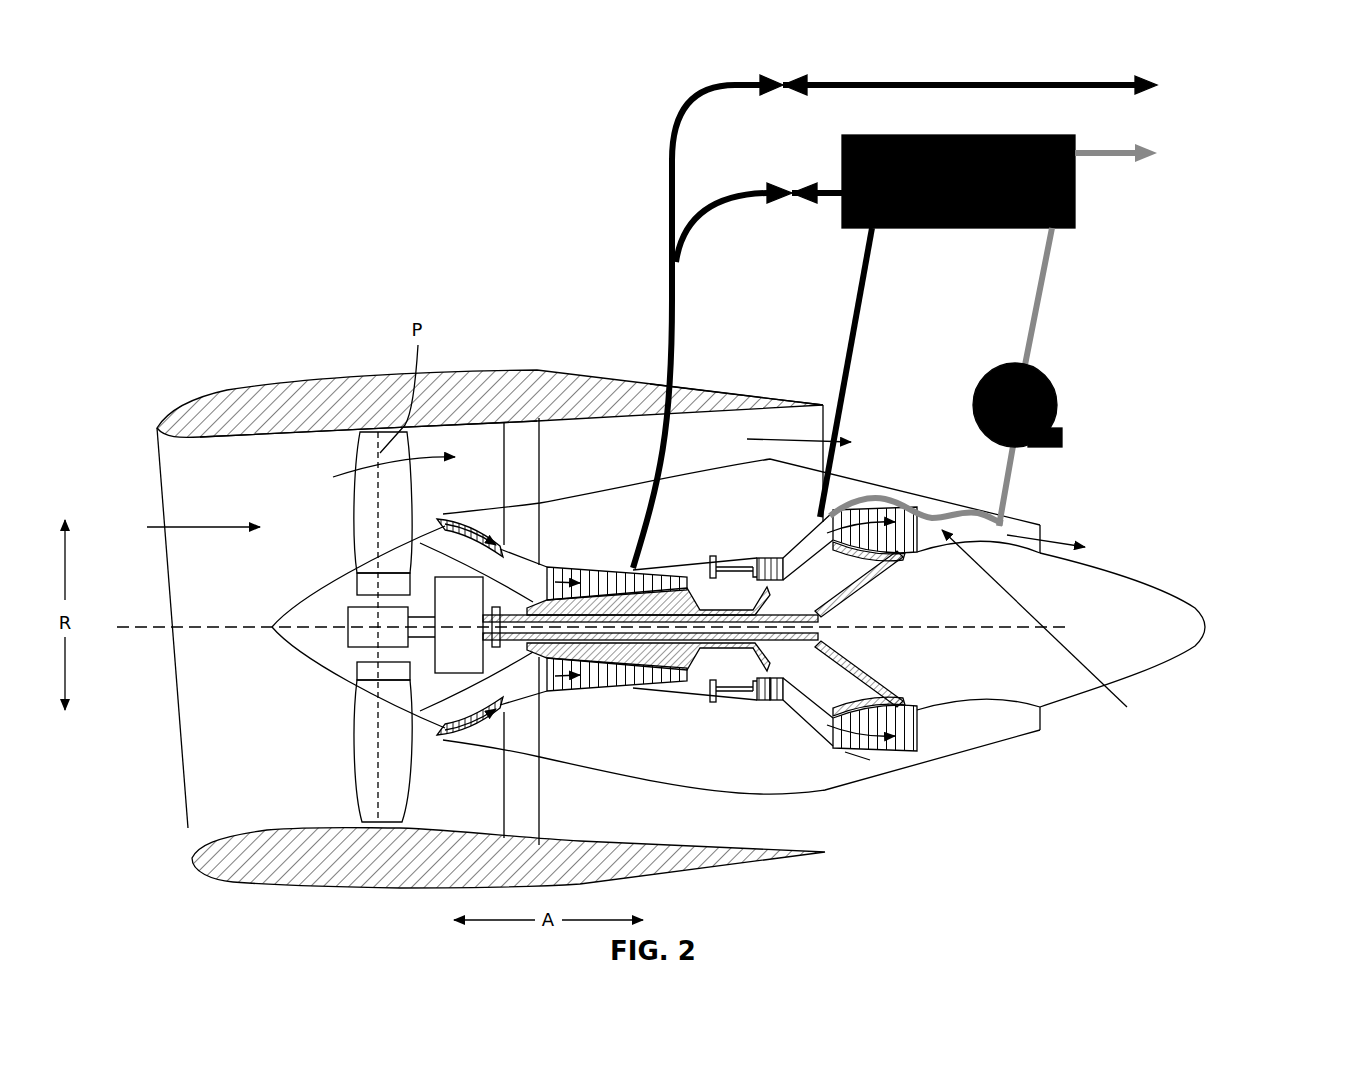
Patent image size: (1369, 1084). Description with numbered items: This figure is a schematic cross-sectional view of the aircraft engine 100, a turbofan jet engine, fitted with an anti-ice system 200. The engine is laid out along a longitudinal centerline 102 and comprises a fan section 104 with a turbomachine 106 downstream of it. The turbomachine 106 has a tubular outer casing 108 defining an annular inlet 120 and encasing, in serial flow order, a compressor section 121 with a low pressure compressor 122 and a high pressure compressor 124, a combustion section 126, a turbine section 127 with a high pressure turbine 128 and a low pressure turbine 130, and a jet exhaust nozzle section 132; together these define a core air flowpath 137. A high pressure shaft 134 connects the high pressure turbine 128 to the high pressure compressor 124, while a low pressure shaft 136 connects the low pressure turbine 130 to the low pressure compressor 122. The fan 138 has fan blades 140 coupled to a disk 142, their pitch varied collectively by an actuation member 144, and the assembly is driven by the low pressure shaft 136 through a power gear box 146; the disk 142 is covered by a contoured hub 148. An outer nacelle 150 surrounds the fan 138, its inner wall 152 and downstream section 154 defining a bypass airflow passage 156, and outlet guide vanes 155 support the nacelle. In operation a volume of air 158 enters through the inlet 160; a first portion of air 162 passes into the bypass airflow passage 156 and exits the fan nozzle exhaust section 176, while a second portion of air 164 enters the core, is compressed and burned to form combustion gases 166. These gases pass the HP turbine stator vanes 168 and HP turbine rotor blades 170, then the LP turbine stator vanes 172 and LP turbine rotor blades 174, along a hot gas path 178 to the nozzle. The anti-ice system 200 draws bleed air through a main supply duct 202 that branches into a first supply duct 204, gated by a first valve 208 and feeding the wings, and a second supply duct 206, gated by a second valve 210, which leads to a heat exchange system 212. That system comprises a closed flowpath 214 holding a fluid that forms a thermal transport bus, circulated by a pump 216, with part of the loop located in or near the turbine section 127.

The gas turbine engine 100 is at (954, 383).
The longitudinal centerline 102 is at (148, 627).
The fan section 104 is at (370, 298).
The turbomachine 106 is at (664, 535).
The outer casing 108 is at (682, 787).
The annular inlet 120 is at (447, 738).
The compressor section 121 is at (558, 742).
The low pressure compressor 122 is at (497, 700).
The high pressure compressor 124 is at (574, 697).
The combustion section 126 is at (707, 697).
The turbine section 127 is at (865, 643).
The high pressure turbine 128 is at (842, 654).
The low pressure turbine 130 is at (886, 747).
The jet exhaust nozzle section 132 is at (961, 741).
The high pressure shaft 134 is at (713, 553).
The low pressure shaft 136 is at (782, 612).
The core air flowpath 137 is at (800, 714).
The fan 138 is at (296, 667).
The fan blades 140 is at (352, 760).
The disk 142 is at (362, 585).
The actuation member 144 is at (350, 615).
The power gear box 146 is at (527, 568).
The hub 148 is at (273, 643).
The outer nacelle 150 is at (400, 888).
The inner wall 152 is at (274, 437).
The downstream section 154 is at (730, 393).
The outlet guide vanes 155 is at (540, 450).
The bypass airflow passage 156 is at (704, 444).
The volume of air 158 is at (193, 525).
The inlet 160 is at (188, 828).
The first portion of air 162 is at (777, 422).
The second portion of air 164 is at (437, 525).
The combustion gases 166 is at (365, 470).
The HP turbine stator vanes 168 is at (733, 702).
The HP turbine rotor blades 170 is at (762, 694).
The LP turbine stator vanes 172 is at (826, 738).
The LP turbine rotor blades 174 is at (845, 752).
The fan nozzle exhaust section 176 is at (812, 423).
The hot gas path 178 is at (806, 528).
The anti-ice system 200 is at (697, 71).
The main supply duct 202 is at (660, 300).
The first supply duct 204 is at (668, 138).
The second supply duct 206 is at (710, 218).
The first valve 208 is at (786, 77).
The second valve 210 is at (794, 203).
The heat exchange system 212 is at (1083, 247).
The closed flowpath 214 is at (857, 335).
The pump 216 is at (1057, 380).